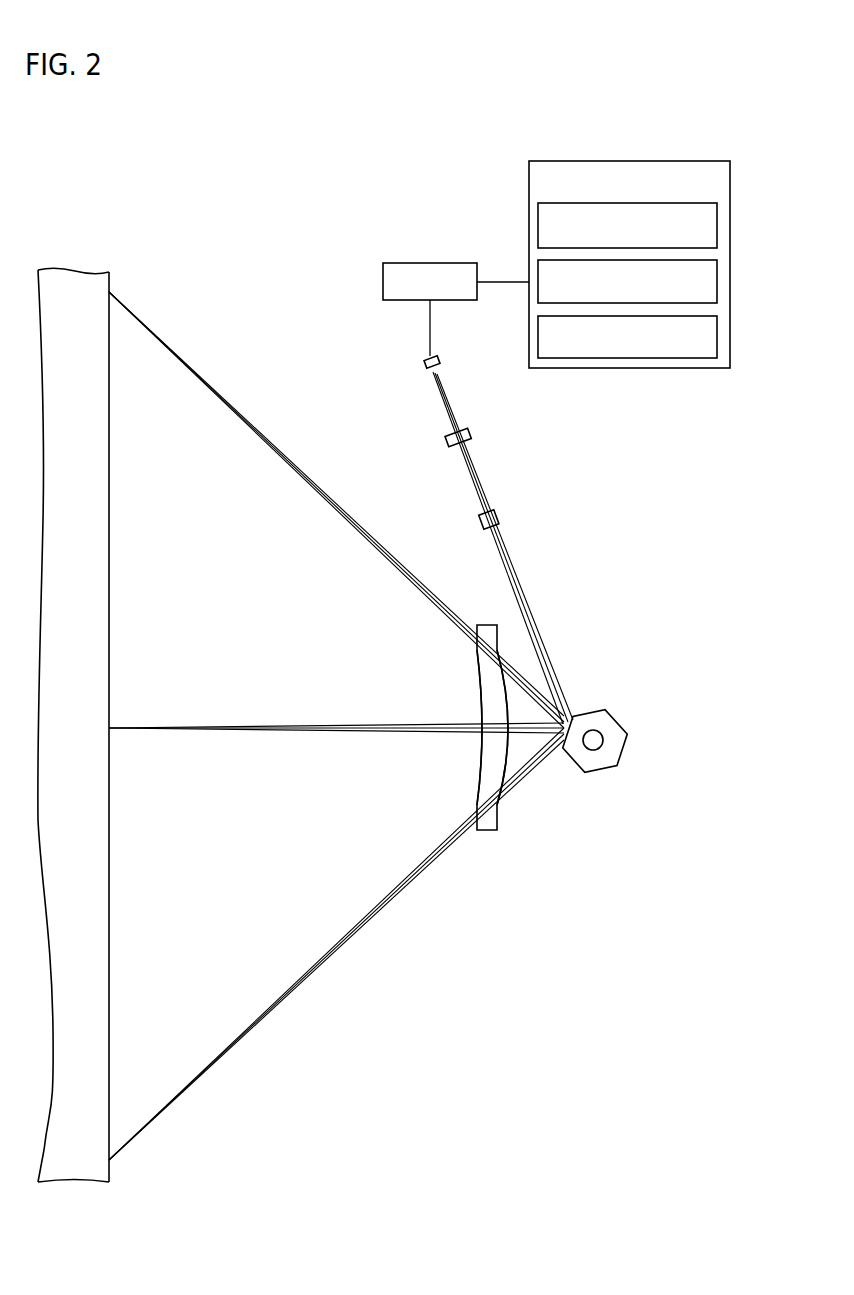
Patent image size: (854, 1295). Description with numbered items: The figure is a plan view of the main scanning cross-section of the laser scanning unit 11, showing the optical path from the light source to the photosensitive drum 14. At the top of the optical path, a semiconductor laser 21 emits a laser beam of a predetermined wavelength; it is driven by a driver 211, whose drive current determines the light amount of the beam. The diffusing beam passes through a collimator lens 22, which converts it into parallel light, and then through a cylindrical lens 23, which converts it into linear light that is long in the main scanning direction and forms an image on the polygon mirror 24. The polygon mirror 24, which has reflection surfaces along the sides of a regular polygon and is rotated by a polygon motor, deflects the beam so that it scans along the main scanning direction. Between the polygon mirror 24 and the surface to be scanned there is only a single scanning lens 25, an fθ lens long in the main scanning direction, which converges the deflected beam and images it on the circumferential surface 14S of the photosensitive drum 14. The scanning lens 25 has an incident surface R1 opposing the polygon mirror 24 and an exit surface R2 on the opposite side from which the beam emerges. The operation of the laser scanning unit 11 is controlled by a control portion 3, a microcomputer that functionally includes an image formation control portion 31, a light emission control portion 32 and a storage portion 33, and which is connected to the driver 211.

The control portion 3 is at (684, 162).
The image formation control portion 31 is at (717, 223).
The light emission control portion 32 is at (717, 282).
The storage portion 33 is at (717, 336).
The driver 211 is at (453, 263).
The laser scanning unit 11 is at (322, 326).
The semiconductor laser 21 is at (441, 355).
The collimator lens 22 is at (469, 432).
The cylindrical lens 23 is at (497, 517).
The polygon mirror 24 is at (617, 713).
The scanning lens 25 is at (487, 625).
The incident surface R1 is at (507, 780).
The exit surface R2 is at (478, 790).
The photosensitive drum 14 is at (65, 270).
The circumferential surface 14S is at (110, 890).